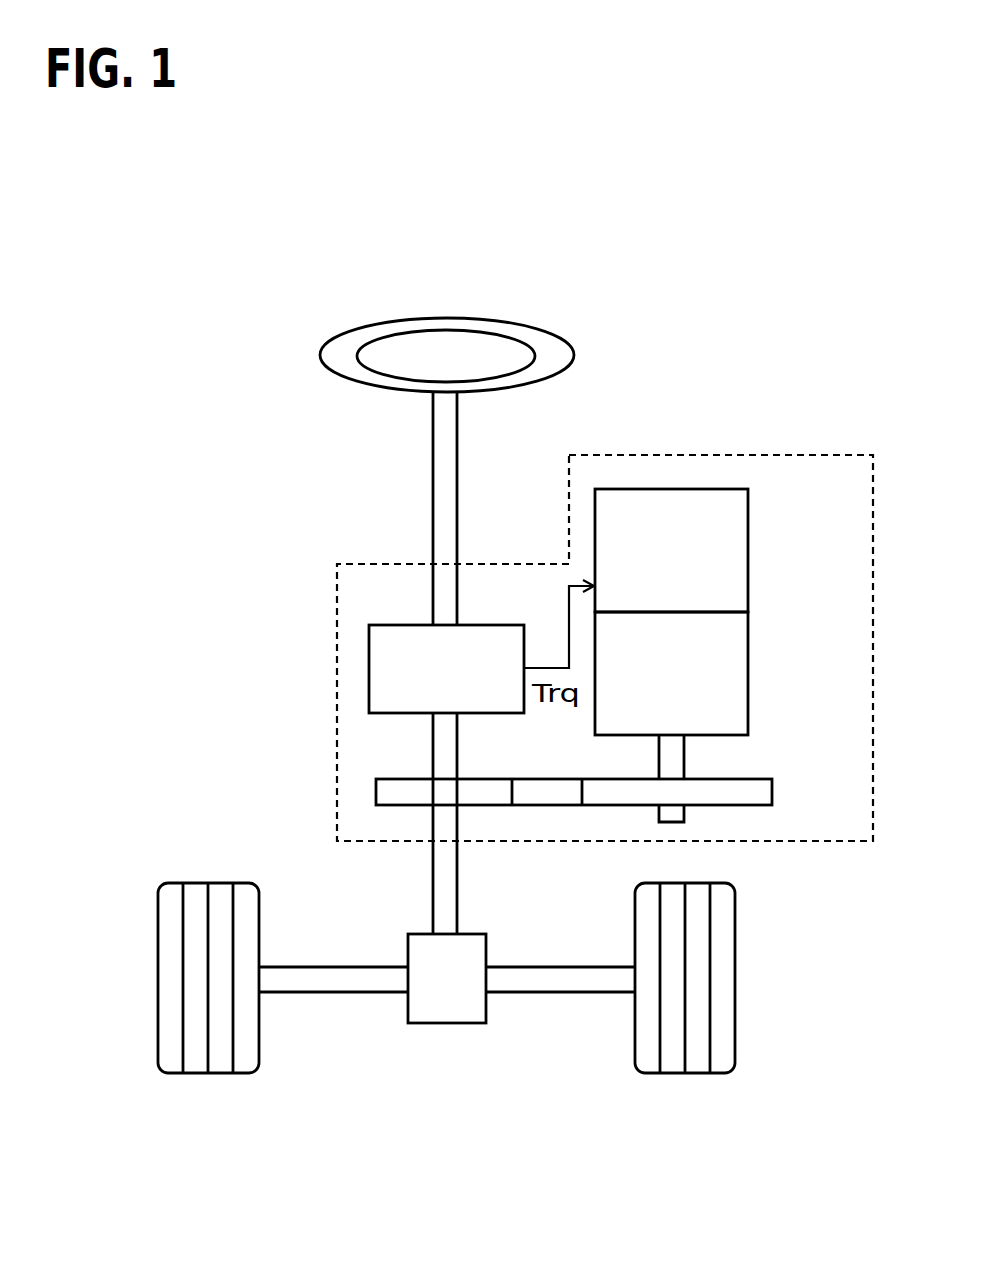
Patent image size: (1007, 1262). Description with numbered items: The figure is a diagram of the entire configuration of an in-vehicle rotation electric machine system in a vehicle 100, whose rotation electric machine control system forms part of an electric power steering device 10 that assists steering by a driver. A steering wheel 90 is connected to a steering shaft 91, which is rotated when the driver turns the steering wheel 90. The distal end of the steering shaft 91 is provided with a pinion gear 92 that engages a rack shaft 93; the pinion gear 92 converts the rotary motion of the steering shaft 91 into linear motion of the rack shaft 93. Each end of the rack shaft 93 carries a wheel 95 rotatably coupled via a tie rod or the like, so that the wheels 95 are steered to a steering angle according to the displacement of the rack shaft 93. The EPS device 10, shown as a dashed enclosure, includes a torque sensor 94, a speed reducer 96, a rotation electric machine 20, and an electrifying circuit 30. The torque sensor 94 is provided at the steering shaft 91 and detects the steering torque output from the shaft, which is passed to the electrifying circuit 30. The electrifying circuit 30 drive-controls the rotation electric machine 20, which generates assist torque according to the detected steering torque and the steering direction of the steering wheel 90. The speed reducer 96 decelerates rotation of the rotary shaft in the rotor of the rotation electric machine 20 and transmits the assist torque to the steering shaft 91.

The vehicle 100 is at (806, 360).
The electric power steering (EPS) device 10 is at (876, 493).
The rotation electric machine 20 is at (750, 667).
The electrifying circuit 30 is at (750, 549).
The steering wheel 90 is at (320, 356).
The steering shaft 91 is at (433, 510).
The pinion gear 92 is at (488, 944).
The rack shaft 93 is at (364, 993).
The torque sensor 94 is at (488, 624).
The wheel 95 is at (158, 938).
The speed reducer 96 is at (773, 792).